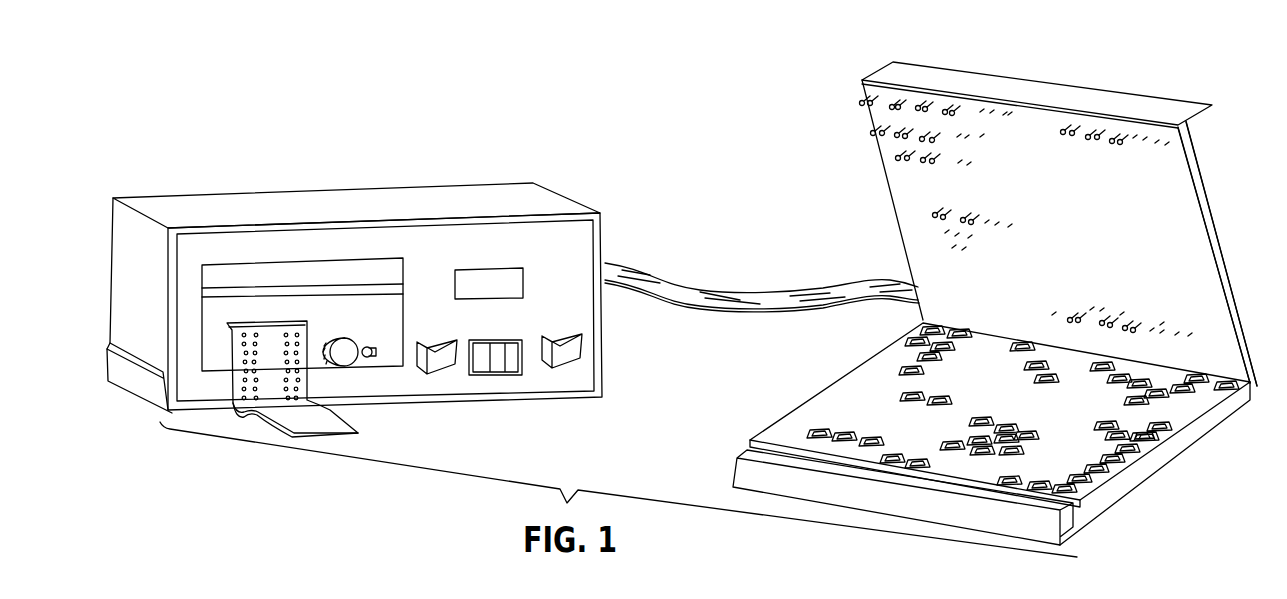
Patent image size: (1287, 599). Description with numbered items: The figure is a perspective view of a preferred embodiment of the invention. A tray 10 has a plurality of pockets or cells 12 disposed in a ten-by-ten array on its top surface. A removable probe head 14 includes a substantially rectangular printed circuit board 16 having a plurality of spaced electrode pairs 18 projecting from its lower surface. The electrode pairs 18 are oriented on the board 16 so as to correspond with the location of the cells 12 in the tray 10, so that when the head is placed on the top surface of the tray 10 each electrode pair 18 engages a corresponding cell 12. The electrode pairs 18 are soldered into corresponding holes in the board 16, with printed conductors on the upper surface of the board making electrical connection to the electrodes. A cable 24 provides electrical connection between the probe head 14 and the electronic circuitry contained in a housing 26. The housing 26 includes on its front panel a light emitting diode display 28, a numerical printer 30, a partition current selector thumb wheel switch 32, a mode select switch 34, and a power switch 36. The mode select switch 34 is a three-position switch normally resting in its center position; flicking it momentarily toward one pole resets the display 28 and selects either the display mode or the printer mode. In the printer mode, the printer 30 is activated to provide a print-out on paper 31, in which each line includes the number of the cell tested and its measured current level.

The tray 10 is at (1093, 507).
The cells 12 is at (820, 433).
The probe head 14 is at (1228, 200).
The printed circuit board 16 is at (1203, 170).
The electrode pairs 18 is at (897, 160).
The cable 24 is at (750, 293).
The housing 26 is at (590, 245).
The light emitting diode display 28 is at (490, 277).
The numerical printer 30 is at (393, 273).
The paper 31 is at (330, 423).
The partition current selector thumb wheel switch 32 is at (500, 345).
The mode select switch 34 is at (445, 352).
The power switch 36 is at (568, 347).